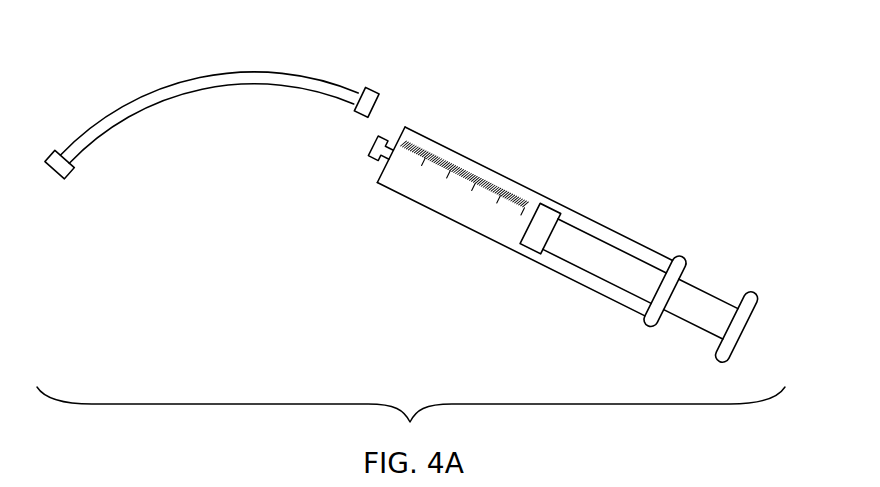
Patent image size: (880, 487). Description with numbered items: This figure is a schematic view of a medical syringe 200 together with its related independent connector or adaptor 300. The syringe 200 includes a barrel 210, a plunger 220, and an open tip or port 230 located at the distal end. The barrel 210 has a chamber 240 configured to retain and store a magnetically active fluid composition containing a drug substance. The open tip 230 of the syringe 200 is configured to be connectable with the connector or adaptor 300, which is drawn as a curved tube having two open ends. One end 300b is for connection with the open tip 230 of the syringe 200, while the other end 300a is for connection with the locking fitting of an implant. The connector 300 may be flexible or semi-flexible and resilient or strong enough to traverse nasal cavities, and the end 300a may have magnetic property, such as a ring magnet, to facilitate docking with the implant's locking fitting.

The syringe 200 is at (542, 218).
The barrel 210 is at (573, 148).
The plunger 220 is at (730, 247).
The open tip or port 230 is at (349, 174).
The chamber 240 is at (412, 183).
The connector or adaptor 300 is at (266, 69).
The end of connector 300a is at (68, 170).
The end of connector 300b is at (368, 99).